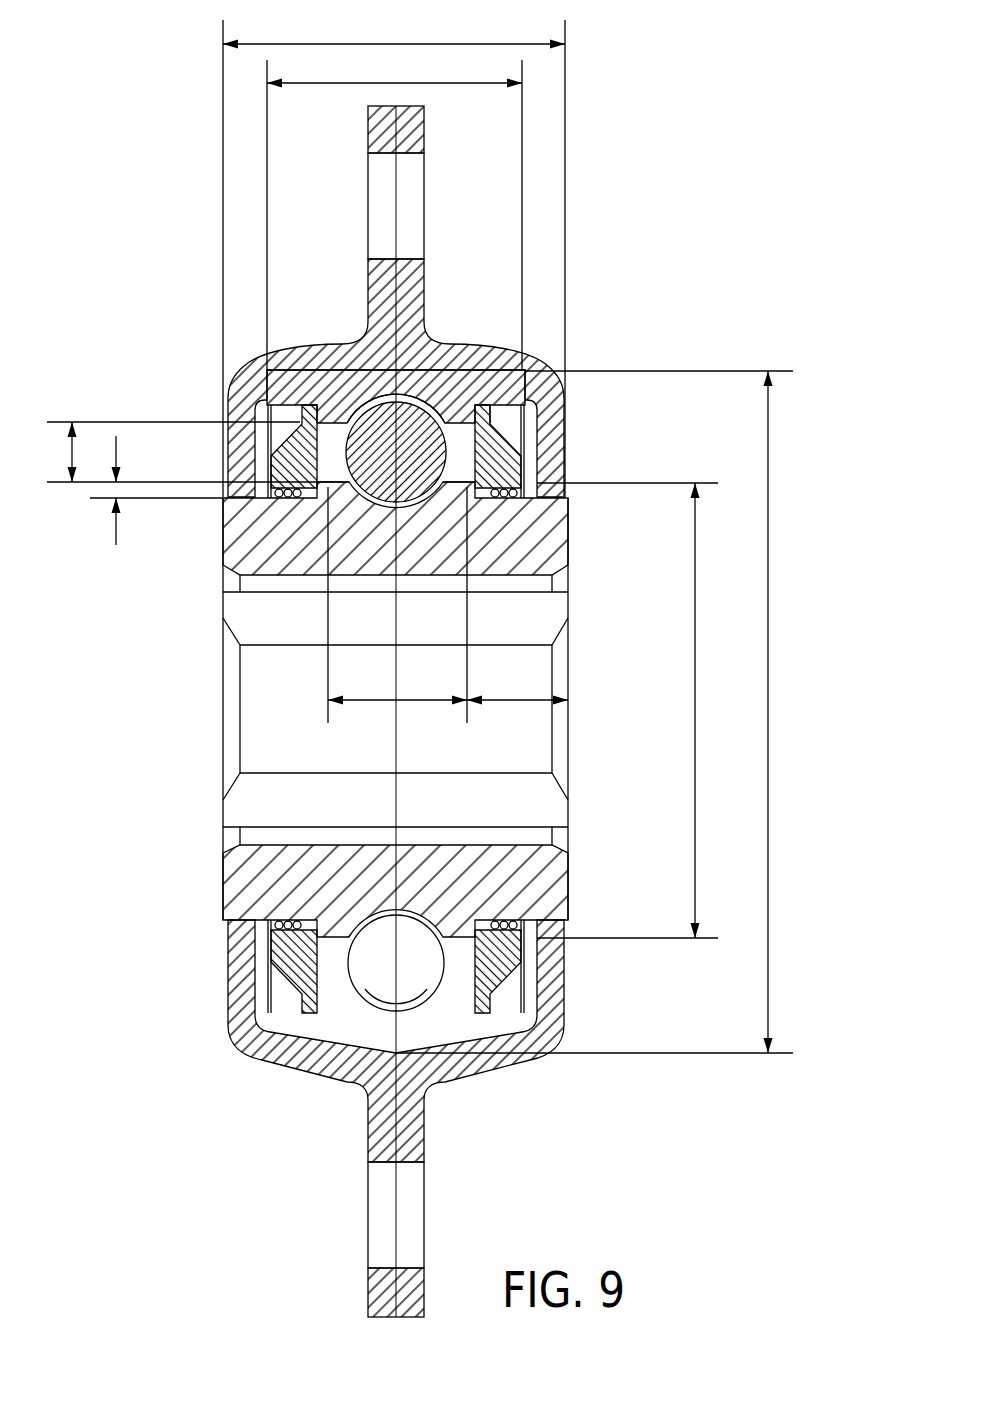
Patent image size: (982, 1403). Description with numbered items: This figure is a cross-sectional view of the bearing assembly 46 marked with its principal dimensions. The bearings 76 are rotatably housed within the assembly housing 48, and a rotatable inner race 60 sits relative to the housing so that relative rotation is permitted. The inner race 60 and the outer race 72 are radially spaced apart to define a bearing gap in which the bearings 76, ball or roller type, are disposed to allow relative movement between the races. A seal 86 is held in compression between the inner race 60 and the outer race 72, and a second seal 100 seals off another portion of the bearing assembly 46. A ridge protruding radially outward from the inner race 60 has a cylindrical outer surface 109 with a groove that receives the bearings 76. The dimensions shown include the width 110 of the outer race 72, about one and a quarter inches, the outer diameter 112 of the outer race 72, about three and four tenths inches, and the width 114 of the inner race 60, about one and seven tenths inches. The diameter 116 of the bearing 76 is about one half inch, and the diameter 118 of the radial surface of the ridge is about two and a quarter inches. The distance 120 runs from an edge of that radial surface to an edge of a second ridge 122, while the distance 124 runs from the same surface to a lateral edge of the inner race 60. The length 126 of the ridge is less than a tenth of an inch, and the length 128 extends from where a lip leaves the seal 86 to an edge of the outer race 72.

The bearing assembly 46 is at (658, 268).
The assembly housing 48 is at (342, 307).
The inner race 60 is at (515, 548).
The outer race 72 is at (302, 392).
The bearing 76 is at (413, 417).
The seal 86 is at (268, 448).
The second seal 100 is at (505, 470).
The cylindrical outer surface 109 is at (310, 483).
The width 110 is at (364, 83).
The outer diameter 112 is at (768, 652).
The width 114 is at (357, 44).
The diameter 116 is at (455, 443).
The diameter 118 is at (693, 672).
The distance 120 is at (392, 705).
The second ridge 122 is at (455, 488).
The distance 124 is at (513, 705).
The length 126 is at (116, 542).
The length 128 is at (80, 437).